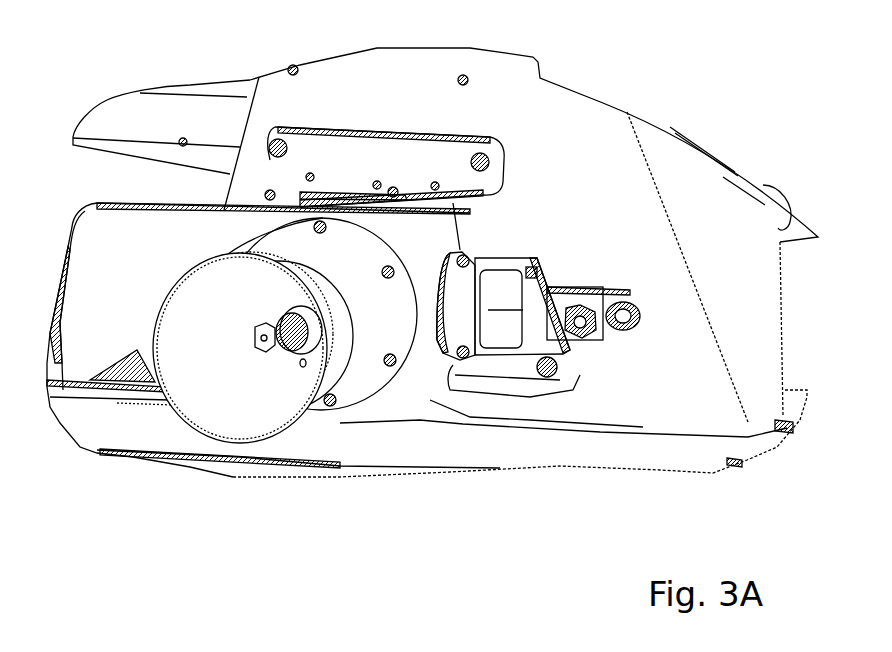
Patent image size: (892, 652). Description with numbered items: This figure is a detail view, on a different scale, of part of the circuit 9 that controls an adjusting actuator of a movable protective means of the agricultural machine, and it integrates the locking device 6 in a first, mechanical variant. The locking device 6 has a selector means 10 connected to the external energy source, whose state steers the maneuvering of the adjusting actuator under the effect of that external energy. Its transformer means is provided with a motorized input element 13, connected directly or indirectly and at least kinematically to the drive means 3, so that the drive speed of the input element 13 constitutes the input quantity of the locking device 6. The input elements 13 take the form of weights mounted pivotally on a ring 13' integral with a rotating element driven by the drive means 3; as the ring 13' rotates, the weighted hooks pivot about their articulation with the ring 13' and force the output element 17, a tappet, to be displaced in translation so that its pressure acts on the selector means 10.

The drive means 3 is at (262, 345).
The locking device 6 is at (507, 310).
The circuit 9 is at (590, 330).
The selector means 10 is at (593, 412).
The input element 13 is at (496, 397).
The ring 13' is at (428, 394).
The output element 17 is at (526, 327).